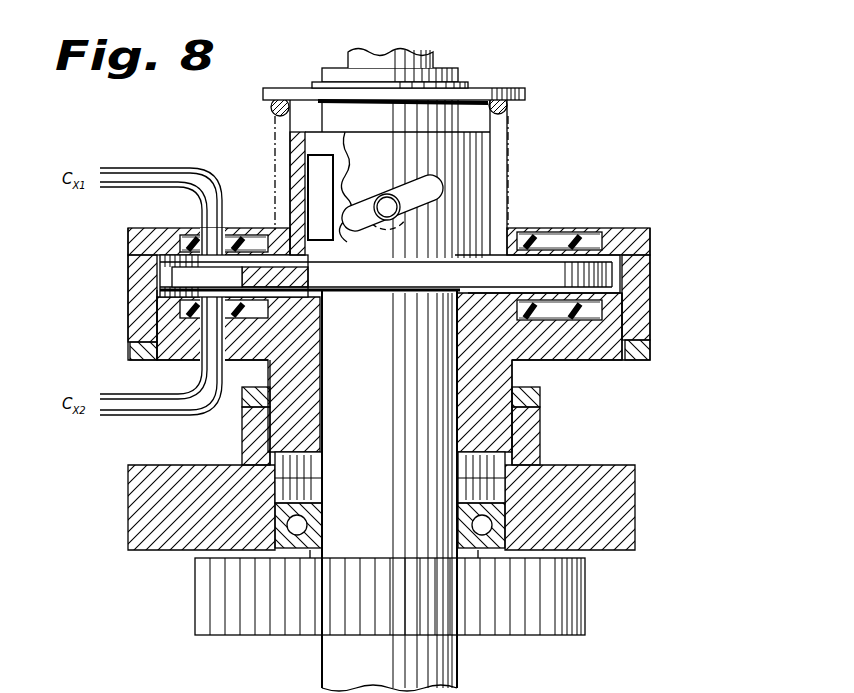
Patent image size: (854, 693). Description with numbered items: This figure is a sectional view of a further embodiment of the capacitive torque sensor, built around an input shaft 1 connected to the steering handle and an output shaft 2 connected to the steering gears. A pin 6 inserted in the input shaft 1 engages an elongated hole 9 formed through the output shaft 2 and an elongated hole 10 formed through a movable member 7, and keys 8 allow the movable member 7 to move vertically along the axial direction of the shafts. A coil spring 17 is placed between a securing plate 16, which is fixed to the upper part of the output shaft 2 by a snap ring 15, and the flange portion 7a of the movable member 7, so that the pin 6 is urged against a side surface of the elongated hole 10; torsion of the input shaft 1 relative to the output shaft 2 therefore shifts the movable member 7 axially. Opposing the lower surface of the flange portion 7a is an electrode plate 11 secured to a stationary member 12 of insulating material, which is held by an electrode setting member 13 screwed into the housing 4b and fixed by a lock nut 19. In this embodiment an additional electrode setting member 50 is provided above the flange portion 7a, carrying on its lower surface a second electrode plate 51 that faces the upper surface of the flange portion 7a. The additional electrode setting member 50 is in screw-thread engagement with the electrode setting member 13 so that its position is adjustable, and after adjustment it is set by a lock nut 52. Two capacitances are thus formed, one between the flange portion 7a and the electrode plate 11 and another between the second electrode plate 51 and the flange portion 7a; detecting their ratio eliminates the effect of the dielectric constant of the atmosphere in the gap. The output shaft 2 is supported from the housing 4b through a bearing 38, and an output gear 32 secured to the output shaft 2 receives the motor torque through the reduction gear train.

The input shaft 1 is at (432, 52).
The output shaft 2 is at (445, 657).
The housing 4b is at (612, 522).
The pin 6 is at (385, 200).
The movable member 7 is at (495, 156).
The flange portion 7a is at (612, 273).
The keys 8 is at (313, 200).
The elongated hole 9 is at (448, 200).
The elongated hole 10 is at (432, 190).
The electrode plate 11 is at (222, 298).
The stationary member 12 is at (592, 318).
The electrode setting member 13 is at (562, 364).
The snap ring 15 is at (484, 78).
The securing plate 16 is at (526, 90).
The coil spring 17 is at (507, 108).
The lock nut 19 is at (547, 403).
The output gear 32 is at (587, 612).
The bearing 38 is at (486, 531).
The additional electrode setting member 50 is at (662, 305).
The second electrode plate 51 is at (606, 232).
The lock nut 52 is at (662, 349).